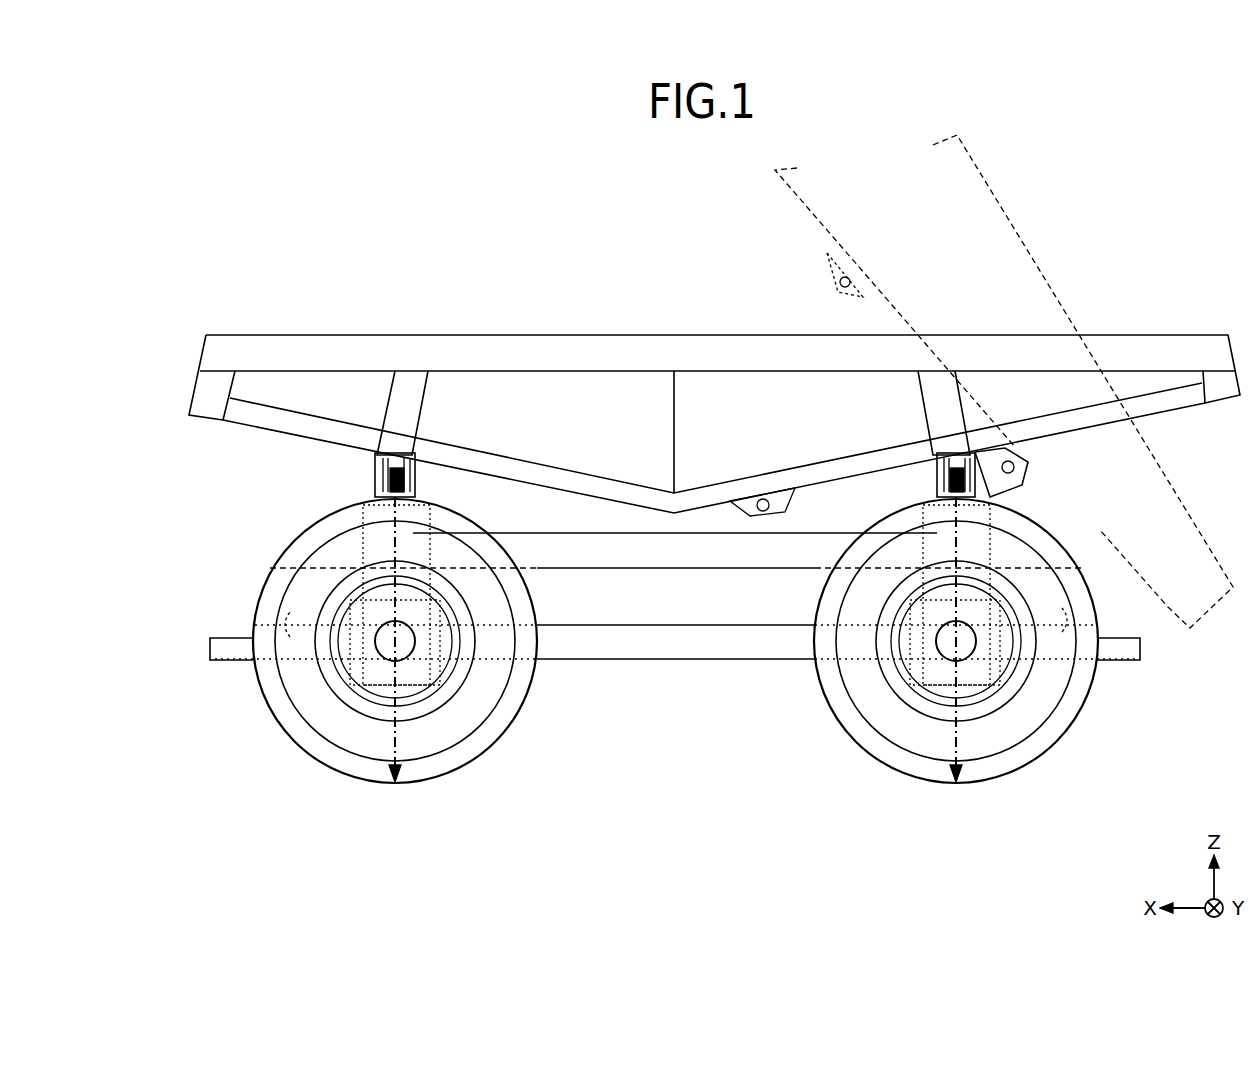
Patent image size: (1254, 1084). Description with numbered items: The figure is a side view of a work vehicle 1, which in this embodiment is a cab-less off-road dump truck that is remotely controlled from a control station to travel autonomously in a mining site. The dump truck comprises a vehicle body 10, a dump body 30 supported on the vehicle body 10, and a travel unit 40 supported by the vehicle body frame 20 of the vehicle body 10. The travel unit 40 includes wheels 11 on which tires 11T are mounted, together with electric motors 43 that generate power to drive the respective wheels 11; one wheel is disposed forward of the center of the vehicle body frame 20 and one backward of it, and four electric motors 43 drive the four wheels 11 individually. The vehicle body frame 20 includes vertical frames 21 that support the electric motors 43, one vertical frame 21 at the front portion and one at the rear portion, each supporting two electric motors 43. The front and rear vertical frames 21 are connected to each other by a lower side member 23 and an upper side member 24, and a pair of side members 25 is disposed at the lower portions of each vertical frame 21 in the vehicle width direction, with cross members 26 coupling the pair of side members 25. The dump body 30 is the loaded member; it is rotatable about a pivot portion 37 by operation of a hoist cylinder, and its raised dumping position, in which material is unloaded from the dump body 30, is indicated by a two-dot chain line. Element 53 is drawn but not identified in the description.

The work vehicle 1 is at (650, 181).
The vehicle body 10 is at (214, 532).
The wheel 11 is at (352, 707).
The tire 11T is at (470, 752).
The vehicle body frame 20 is at (722, 671).
The vertical frame 21 is at (365, 550).
The lower side member 23 is at (630, 660).
The upper side member 24 is at (672, 553).
The side member 25 is at (290, 637).
The cross member 26 is at (210, 653).
The dump body 30 is at (1185, 429).
The pivot portion 37 is at (1030, 462).
The travel unit 40 is at (233, 716).
The electric motor 43 is at (430, 688).
The damper 53 is at (418, 503).